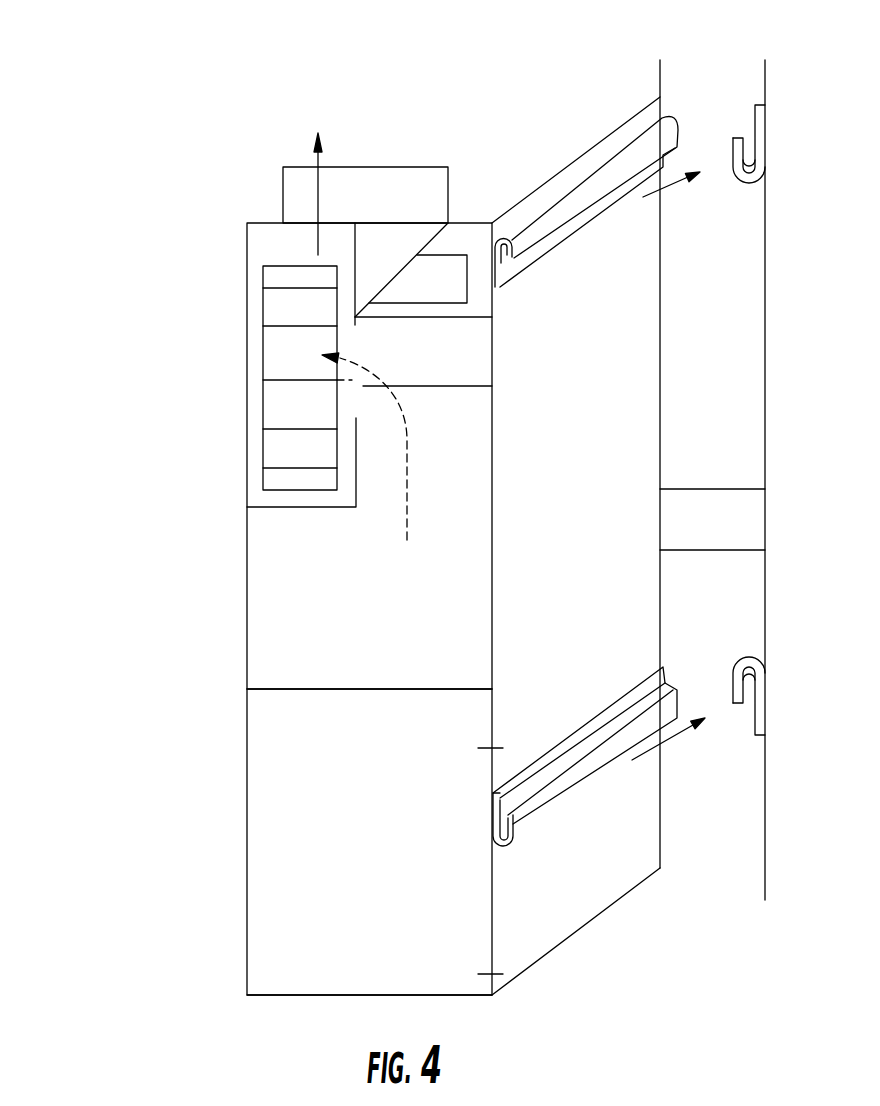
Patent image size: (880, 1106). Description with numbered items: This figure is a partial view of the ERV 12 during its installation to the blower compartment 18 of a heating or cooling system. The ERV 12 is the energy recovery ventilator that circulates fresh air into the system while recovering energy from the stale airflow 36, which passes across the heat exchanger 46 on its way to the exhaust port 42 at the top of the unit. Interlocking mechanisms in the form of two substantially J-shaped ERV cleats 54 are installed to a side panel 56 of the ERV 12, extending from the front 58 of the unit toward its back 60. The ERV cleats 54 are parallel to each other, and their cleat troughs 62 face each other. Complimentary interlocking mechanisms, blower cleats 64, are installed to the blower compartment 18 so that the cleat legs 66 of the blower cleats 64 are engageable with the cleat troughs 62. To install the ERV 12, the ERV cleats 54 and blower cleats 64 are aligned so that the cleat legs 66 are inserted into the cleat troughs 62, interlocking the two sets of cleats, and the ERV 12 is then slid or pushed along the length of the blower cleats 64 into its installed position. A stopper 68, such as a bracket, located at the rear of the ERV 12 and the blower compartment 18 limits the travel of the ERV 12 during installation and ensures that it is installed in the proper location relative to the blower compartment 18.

The ERV 12 is at (105, 338).
The blower compartment 18 is at (865, 403).
The stale airflow 36 is at (320, 158).
The exhaust port 42 is at (298, 177).
The heat exchanger 46 is at (380, 801).
The ERV cleat 54 is at (500, 240).
The side panel 56 is at (566, 586).
The front 58 is at (386, 586).
The back 60 is at (632, 48).
The cleat trough 62 is at (512, 248).
The blower cleat 64 is at (765, 158).
The cleat leg 66 is at (740, 138).
The stopper 68 is at (720, 503).